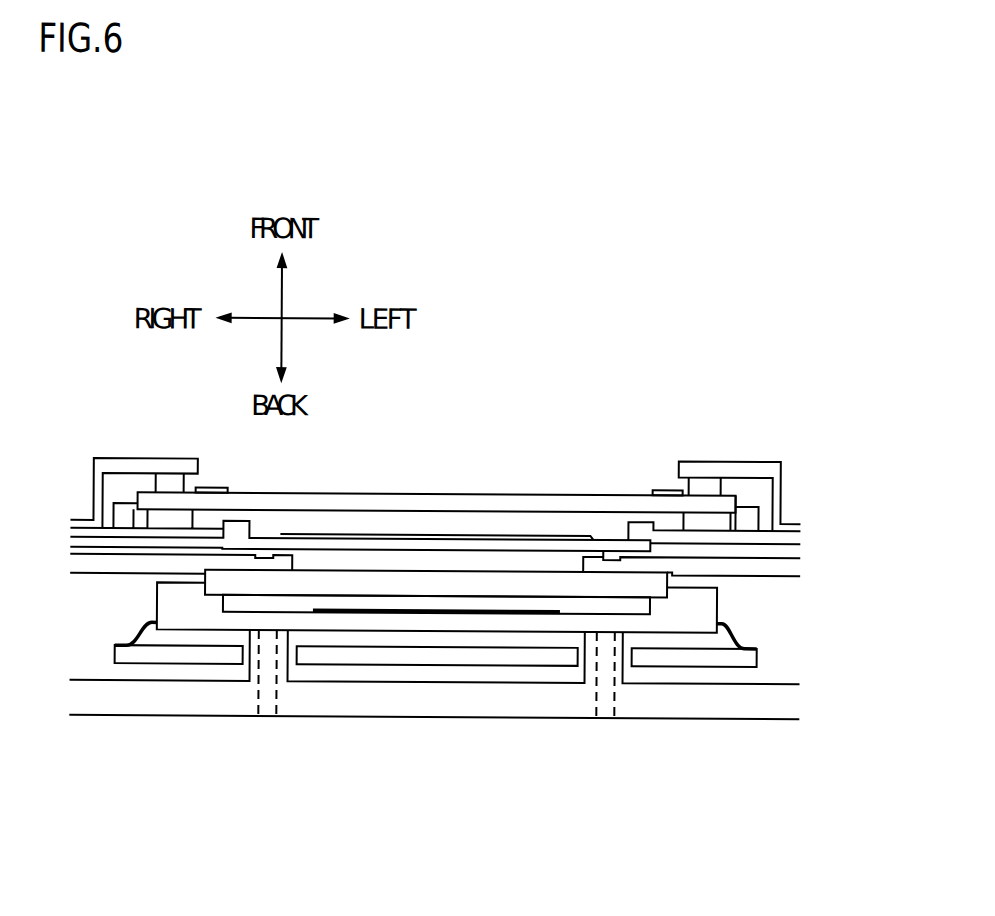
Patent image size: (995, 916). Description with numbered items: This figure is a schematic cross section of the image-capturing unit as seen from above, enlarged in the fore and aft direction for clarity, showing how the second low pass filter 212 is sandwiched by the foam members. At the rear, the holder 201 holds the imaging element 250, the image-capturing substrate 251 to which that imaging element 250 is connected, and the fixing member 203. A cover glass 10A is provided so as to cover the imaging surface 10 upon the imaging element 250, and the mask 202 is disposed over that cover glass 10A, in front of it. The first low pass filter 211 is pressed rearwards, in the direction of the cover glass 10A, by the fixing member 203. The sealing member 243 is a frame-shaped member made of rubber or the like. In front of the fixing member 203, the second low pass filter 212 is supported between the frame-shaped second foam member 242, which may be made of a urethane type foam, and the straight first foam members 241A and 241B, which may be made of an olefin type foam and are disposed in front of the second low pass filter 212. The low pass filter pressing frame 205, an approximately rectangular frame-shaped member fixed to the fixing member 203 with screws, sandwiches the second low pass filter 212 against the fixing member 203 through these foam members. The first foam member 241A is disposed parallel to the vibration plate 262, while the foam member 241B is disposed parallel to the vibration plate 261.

The imaging surface 10 is at (353, 611).
The cover glass 10A is at (433, 580).
The holder 201 is at (787, 701).
The mask 202 is at (793, 566).
The fixing member 203 is at (757, 537).
The low pass filter pressing frame 205 is at (755, 471).
The first low pass filter 211 is at (567, 542).
The second low pass filter 212 is at (507, 502).
The first foam member 241A is at (160, 484).
The first foam member 241B is at (708, 486).
The second foam member 242 is at (694, 521).
The sealing member 243 is at (750, 518).
The imaging element 250 is at (700, 606).
The image-capturing substrate 251 is at (191, 656).
The vibration plate 261 is at (653, 489).
The vibration plate 262 is at (213, 489).